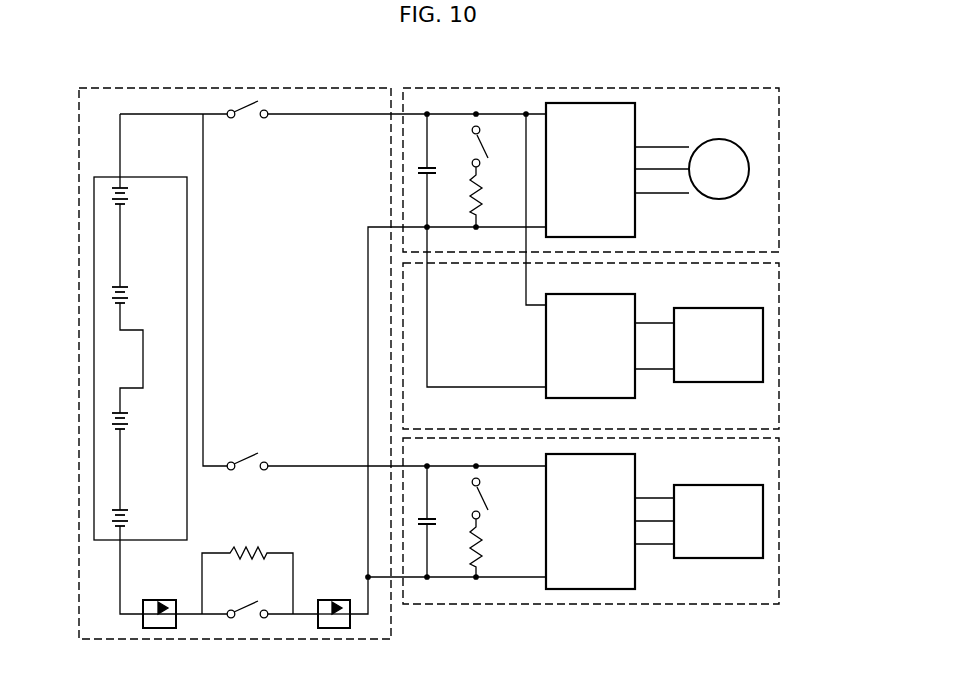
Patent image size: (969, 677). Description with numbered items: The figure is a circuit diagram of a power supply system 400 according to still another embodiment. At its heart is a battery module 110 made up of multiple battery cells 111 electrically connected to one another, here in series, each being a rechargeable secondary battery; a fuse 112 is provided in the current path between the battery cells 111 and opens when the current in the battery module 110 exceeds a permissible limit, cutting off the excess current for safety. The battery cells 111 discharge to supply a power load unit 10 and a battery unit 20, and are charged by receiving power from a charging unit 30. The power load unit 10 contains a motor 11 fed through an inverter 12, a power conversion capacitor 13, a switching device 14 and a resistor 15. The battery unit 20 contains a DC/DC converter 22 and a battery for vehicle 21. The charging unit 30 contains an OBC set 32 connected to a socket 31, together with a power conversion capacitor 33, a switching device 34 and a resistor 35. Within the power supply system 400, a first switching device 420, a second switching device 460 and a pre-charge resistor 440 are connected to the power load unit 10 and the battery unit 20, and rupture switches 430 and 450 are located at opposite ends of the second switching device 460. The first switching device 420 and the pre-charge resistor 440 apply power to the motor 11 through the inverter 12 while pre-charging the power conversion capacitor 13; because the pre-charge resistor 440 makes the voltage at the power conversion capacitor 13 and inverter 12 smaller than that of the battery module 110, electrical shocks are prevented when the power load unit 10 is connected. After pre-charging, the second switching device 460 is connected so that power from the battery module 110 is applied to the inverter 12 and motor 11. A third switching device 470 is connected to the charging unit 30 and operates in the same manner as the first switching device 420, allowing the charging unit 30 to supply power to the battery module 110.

The power supply system 400 is at (73, 86).
The battery module 110 is at (140, 340).
The battery cell 111 is at (130, 200).
The fuse 112 is at (143, 368).
The first switching device 420 is at (250, 120).
The third switching device 470 is at (250, 462).
The pre-charge resistor 440 is at (246, 549).
The rupture switch 450 is at (161, 600).
The second switching device 460 is at (249, 603).
The rupture switch 430 is at (336, 600).
The power load unit 10 is at (788, 98).
The motor 11 is at (719, 199).
The inverter 12 is at (636, 115).
The power conversion capacitor 13 is at (436, 171).
The switching device 14 is at (485, 136).
The resistor 15 is at (482, 193).
The battery unit 20 is at (788, 276).
The battery for vehicle 21 is at (718, 382).
The DC/DC converter 22 is at (636, 296).
The charging unit 30 is at (788, 451).
The socket 31 is at (718, 558).
The OBC set 32 is at (636, 468).
The power conversion capacitor 33 is at (436, 522).
The switching device 34 is at (485, 488).
The resistor 35 is at (482, 545).